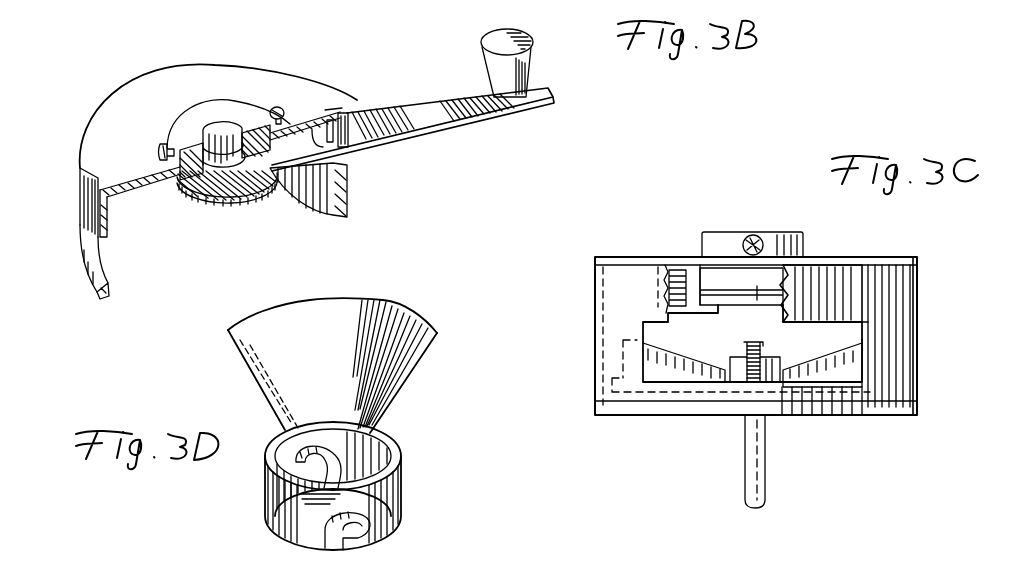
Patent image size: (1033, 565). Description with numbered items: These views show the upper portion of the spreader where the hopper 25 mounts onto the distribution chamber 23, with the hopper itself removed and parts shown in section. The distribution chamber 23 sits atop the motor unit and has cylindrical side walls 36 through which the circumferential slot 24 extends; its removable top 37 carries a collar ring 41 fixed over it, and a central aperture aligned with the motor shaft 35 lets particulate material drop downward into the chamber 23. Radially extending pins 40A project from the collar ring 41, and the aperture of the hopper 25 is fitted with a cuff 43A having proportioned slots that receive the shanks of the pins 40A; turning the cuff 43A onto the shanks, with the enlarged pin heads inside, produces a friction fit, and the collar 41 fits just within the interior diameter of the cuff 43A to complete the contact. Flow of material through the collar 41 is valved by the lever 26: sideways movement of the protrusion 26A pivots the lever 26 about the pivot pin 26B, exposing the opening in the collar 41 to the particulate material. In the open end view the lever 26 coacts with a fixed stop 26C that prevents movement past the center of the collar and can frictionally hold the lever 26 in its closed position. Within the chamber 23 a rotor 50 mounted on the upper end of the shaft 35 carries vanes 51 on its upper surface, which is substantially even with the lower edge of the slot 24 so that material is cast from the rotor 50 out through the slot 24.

In FIG. 3B, the distribution chamber 23 is at (80, 176).
In FIG. 3C, the distribution chamber 23 is at (913, 323).
In FIG. 3B, the circumferential slot 24 is at (100, 238).
In FIG. 3C, the circumferential slot 24 is at (850, 320).
In FIG. 3D, the hopper 25 is at (413, 383).
In FIG. 3B, the lever 26 is at (446, 118).
In FIG. 3C, the lever 26 is at (762, 307).
In FIG. 3B, the protrusion 26A is at (531, 43).
In FIG. 3B, the pivot pin 26B is at (340, 110).
In FIG. 3C, the fixed stop 26C is at (668, 305).
In FIG. 3C, the shaft 35 is at (745, 457).
In FIG. 3B, the cylindrical side walls 36 is at (95, 292).
In FIG. 3B, the top 37 is at (226, 70).
In FIG. 3B, the radially extending pins 40A is at (158, 148).
In FIG. 3C, the radially extending pins 40A is at (751, 234).
In FIG. 3B, the collar ring 41 is at (238, 100).
In FIG. 3C, the collar ring 41 is at (717, 243).
In FIG. 3D, the cuff 43A is at (401, 487).
In FIG. 3C, the rotor 50 is at (797, 385).
In FIG. 3C, the wedge member 51 is at (725, 370).